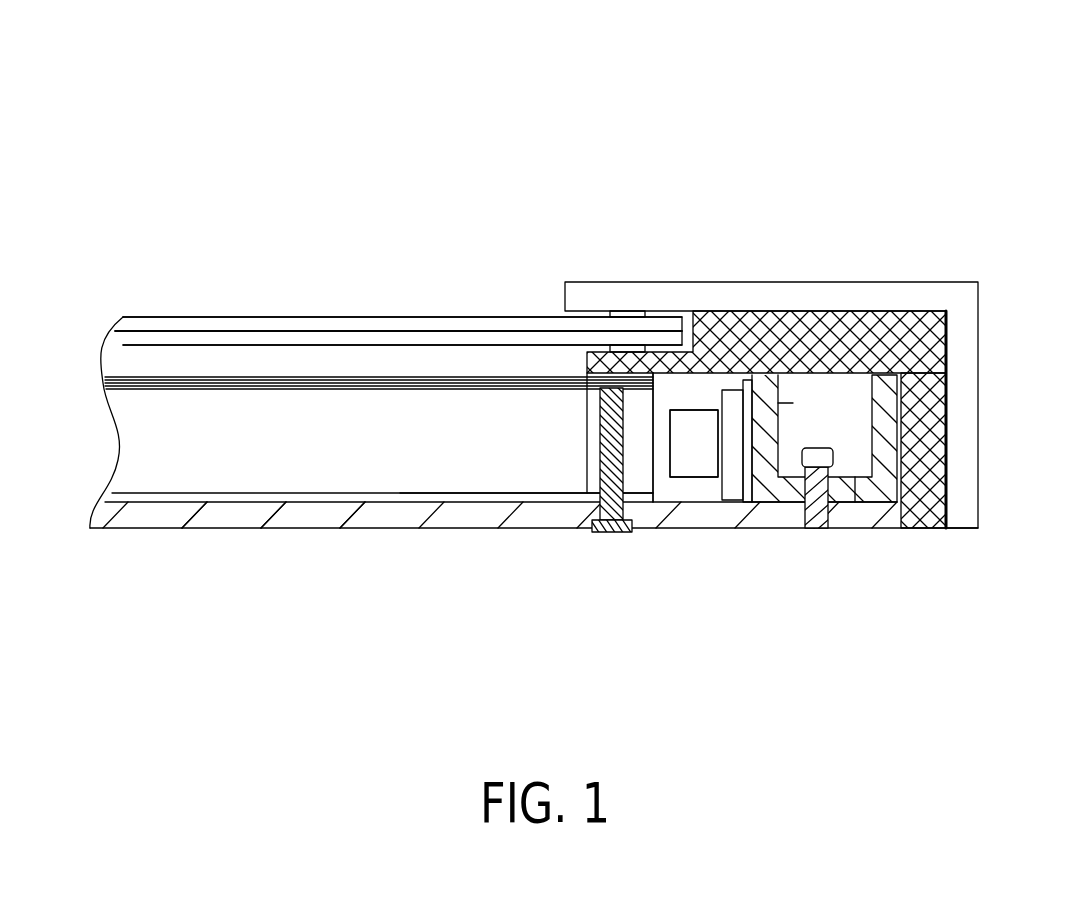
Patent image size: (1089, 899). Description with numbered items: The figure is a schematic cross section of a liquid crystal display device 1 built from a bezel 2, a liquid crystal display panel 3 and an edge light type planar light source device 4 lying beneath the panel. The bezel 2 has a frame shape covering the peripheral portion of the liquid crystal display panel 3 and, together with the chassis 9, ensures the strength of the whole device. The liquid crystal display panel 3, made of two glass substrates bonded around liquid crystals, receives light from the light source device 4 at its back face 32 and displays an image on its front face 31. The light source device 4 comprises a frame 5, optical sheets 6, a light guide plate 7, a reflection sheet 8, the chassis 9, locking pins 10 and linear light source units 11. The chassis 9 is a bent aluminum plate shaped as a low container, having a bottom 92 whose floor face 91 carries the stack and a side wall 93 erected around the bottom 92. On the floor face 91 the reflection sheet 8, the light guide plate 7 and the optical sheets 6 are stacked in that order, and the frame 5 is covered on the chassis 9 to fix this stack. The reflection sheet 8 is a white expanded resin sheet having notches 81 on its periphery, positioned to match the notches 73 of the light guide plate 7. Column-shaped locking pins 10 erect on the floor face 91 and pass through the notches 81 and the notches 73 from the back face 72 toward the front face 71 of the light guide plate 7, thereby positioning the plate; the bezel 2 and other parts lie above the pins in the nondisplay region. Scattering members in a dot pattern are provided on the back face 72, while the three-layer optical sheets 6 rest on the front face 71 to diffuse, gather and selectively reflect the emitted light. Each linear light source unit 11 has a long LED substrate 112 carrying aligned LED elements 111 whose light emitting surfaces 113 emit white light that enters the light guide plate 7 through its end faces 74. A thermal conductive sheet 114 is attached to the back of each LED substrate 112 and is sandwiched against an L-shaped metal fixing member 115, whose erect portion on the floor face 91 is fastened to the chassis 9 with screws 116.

The liquid crystal display device 1 is at (977, 132).
The bezel 2 is at (880, 283).
The liquid crystal display panel 3 is at (400, 317).
The front face 31 is at (485, 316).
The back face 32 is at (358, 345).
The edge light type planar light source device 4 is at (399, 529).
The frame 5 is at (938, 355).
The optical sheets 6 is at (118, 377).
The light guide plate 7 is at (120, 450).
The front face 71 is at (118, 388).
The back face 72 is at (457, 494).
The notches 73 is at (647, 477).
The end faces 74 is at (653, 448).
The reflection sheet 8 is at (110, 493).
The notches 81 is at (643, 494).
The chassis 9 is at (100, 520).
The floor face 91 is at (310, 500).
The bottom 92 is at (352, 528).
The side wall 93 is at (890, 428).
The locking pins 10 is at (600, 468).
The linear light source units 11 is at (778, 403).
The LED elements 111 is at (708, 412).
The LED substrate 112 is at (737, 497).
The light emitting surface 113 is at (668, 420).
The thermal conductive sheet 114 is at (751, 497).
The fixing members 115 is at (813, 513).
The screws 116 is at (818, 446).